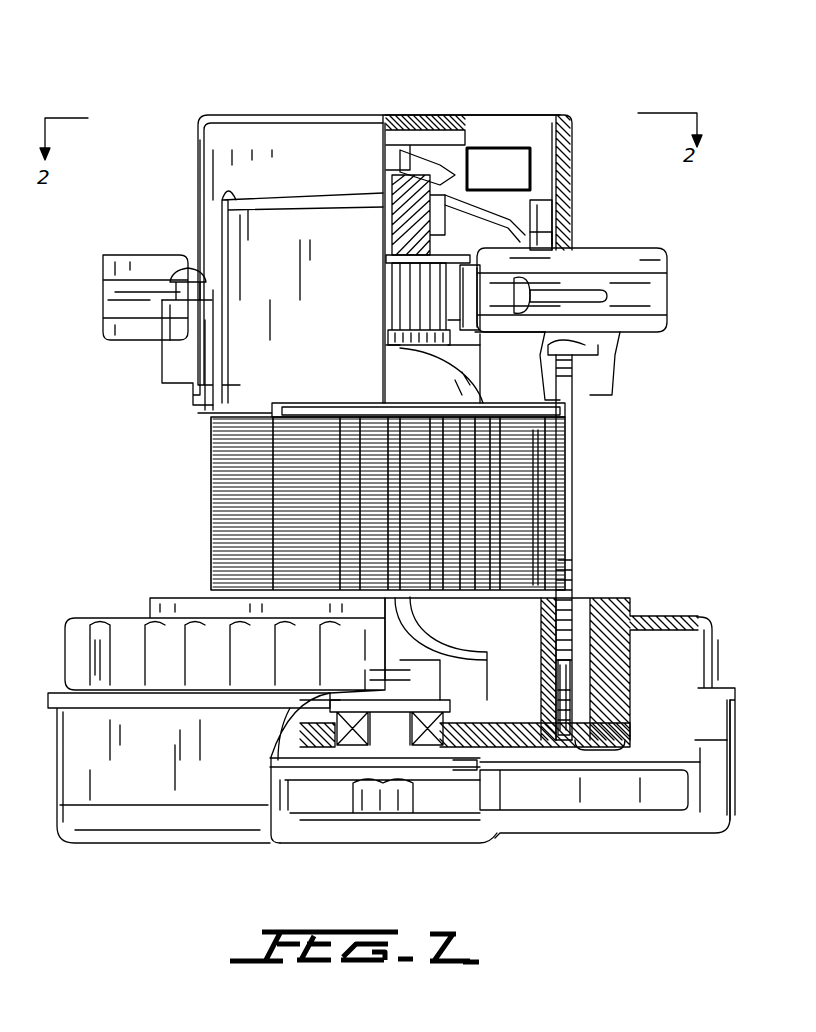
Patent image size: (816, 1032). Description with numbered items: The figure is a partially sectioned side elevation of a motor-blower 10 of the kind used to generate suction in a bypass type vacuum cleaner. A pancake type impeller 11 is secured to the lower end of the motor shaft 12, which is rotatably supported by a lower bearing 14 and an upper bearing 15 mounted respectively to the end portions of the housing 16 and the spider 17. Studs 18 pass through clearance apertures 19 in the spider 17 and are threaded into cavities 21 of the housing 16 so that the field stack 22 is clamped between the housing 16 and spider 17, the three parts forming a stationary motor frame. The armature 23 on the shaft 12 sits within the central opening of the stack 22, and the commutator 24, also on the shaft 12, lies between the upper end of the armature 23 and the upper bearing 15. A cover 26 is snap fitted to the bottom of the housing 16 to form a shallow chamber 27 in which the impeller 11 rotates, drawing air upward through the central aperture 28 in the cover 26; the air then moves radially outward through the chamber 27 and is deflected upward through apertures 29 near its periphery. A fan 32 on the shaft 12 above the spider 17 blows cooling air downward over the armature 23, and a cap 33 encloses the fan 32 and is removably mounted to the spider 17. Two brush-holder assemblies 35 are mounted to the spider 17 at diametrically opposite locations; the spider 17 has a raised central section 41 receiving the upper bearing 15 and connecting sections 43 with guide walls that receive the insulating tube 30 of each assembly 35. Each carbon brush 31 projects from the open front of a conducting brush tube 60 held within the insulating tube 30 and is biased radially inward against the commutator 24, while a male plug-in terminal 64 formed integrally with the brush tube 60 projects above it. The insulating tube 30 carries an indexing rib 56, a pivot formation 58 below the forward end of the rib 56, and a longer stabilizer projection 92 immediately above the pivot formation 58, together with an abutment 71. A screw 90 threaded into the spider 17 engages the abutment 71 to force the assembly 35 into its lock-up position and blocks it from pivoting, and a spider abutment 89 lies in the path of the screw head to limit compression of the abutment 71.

The motor-blower 10 is at (408, 89).
The pancake type impeller 11 is at (660, 775).
The motor shaft 12 is at (425, 700).
The lower bearing 14 is at (455, 718).
The upper bearing 15 is at (395, 222).
The housing 16 is at (630, 602).
The spider 17 is at (555, 212).
The studs 18 is at (580, 488).
The clearance apertures 19 is at (572, 408).
The cavities 21 is at (570, 700).
The field stack 22 is at (548, 525).
The armature 23 is at (405, 372).
The commutator 24 is at (397, 305).
The cover 26 is at (578, 833).
The shallow chamber 27 is at (708, 800).
The central aperture 28 is at (330, 843).
The apertures 29 is at (720, 655).
The insulating tube 30 is at (670, 262).
The carbon brush 31 is at (450, 266).
The fan 32 is at (512, 148).
The cap 33 is at (306, 115).
The brush-holder assemblies 35 is at (682, 296).
The raised central section 41 is at (498, 169).
The connecting sections 43 is at (590, 372).
The indexing rib 56 is at (612, 292).
The pivot formation 58 is at (527, 340).
The brush tube 60 is at (469, 335).
The male plug-in terminal 64 is at (472, 262).
The abutment 71 is at (150, 292).
The spider abutment 89 is at (192, 300).
The screw 90 is at (183, 268).
The stabilizer projection 92 is at (548, 290).